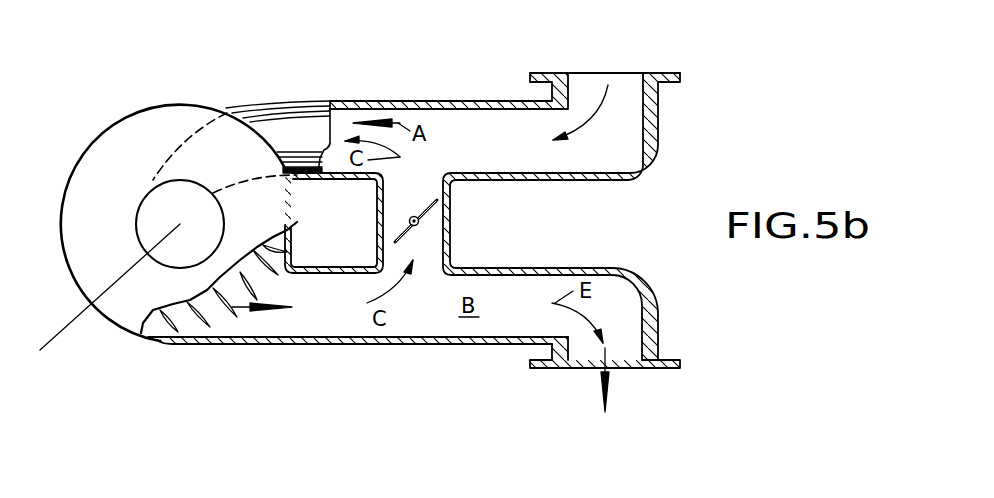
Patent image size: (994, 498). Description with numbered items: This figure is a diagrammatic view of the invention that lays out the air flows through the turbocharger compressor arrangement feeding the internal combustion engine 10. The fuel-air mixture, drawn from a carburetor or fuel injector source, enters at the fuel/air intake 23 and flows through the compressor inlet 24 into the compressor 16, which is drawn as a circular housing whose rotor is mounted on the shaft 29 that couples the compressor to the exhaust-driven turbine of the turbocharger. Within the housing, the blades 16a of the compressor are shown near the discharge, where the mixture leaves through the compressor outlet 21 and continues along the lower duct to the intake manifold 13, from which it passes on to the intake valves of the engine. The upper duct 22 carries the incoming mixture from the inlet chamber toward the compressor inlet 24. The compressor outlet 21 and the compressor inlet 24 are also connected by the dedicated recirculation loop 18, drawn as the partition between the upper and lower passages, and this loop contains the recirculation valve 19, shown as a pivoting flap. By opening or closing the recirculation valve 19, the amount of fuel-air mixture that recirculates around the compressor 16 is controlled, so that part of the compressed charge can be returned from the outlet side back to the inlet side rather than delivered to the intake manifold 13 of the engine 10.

The internal combustion engine 10 is at (602, 51).
The intake manifold 13 is at (588, 358).
The compressor 16 is at (183, 66).
The fan blades 16a is at (188, 327).
The dedicated recirculation loop 18 is at (450, 230).
The recirculation valve 19 is at (425, 207).
The compressor outlet 21 is at (335, 332).
The upper duct 22 is at (479, 120).
The fuel/air intake 23 is at (625, 161).
The compressor inlet 24 is at (310, 118).
The shaft 29 is at (62, 330).